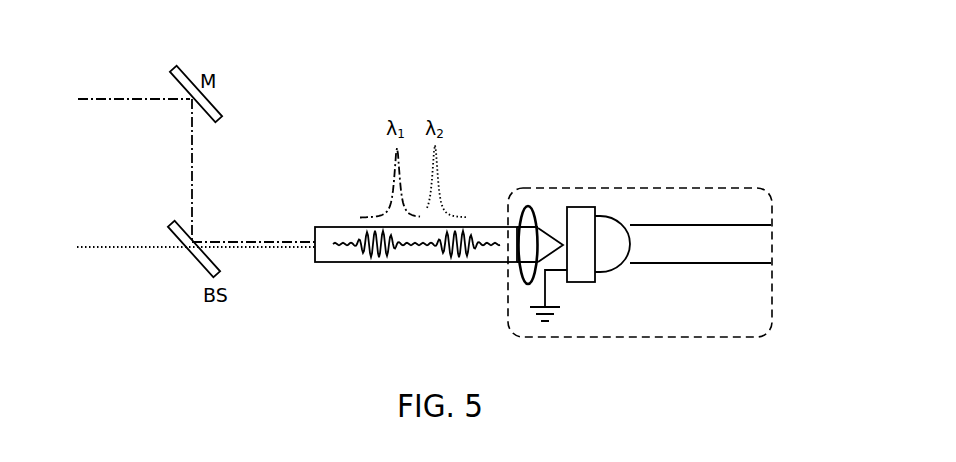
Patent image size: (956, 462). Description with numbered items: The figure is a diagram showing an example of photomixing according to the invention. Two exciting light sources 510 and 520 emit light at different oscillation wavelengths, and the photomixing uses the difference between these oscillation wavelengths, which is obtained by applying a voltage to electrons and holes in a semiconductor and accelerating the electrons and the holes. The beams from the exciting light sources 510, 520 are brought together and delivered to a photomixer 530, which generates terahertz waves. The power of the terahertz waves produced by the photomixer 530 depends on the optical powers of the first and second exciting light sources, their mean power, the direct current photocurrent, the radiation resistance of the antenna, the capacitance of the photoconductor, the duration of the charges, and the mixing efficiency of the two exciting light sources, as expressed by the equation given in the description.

The exciting light source 510 is at (97, 118).
The exciting light source 520 is at (98, 268).
The photomixer 530 is at (772, 212).